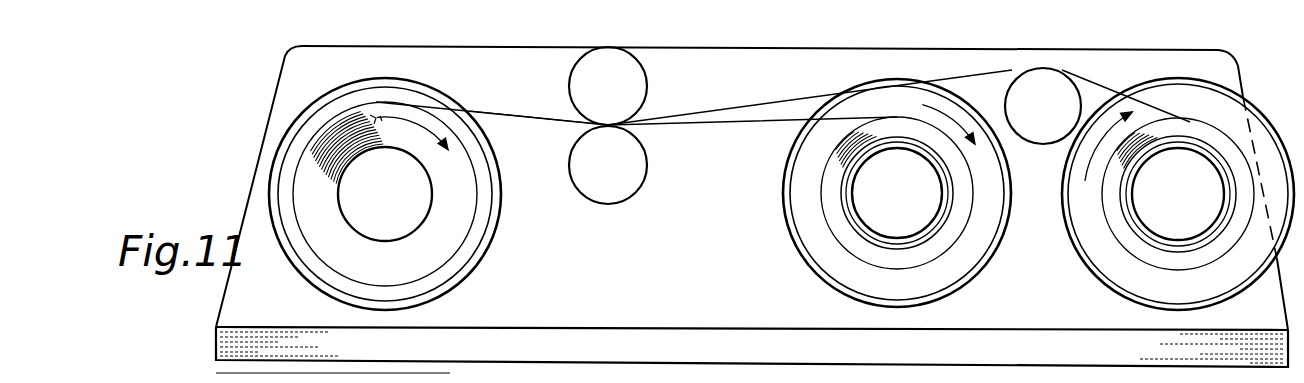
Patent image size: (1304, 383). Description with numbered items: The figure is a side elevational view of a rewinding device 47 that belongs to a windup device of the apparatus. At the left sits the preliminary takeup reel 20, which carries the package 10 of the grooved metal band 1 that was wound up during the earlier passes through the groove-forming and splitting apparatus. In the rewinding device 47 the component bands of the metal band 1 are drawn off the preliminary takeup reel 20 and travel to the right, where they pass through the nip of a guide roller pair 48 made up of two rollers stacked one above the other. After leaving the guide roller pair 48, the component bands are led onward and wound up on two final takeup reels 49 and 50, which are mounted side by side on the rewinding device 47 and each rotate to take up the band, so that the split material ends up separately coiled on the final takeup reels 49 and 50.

The metal band 1 is at (502, 113).
The package 10 is at (310, 212).
The preliminary takeup reel 20 is at (300, 118).
The rewinding device 47 is at (743, 50).
The guide roller pair 48 is at (583, 87).
The final takeup reel 49 is at (812, 272).
The final takeup reel 50 is at (1110, 268).